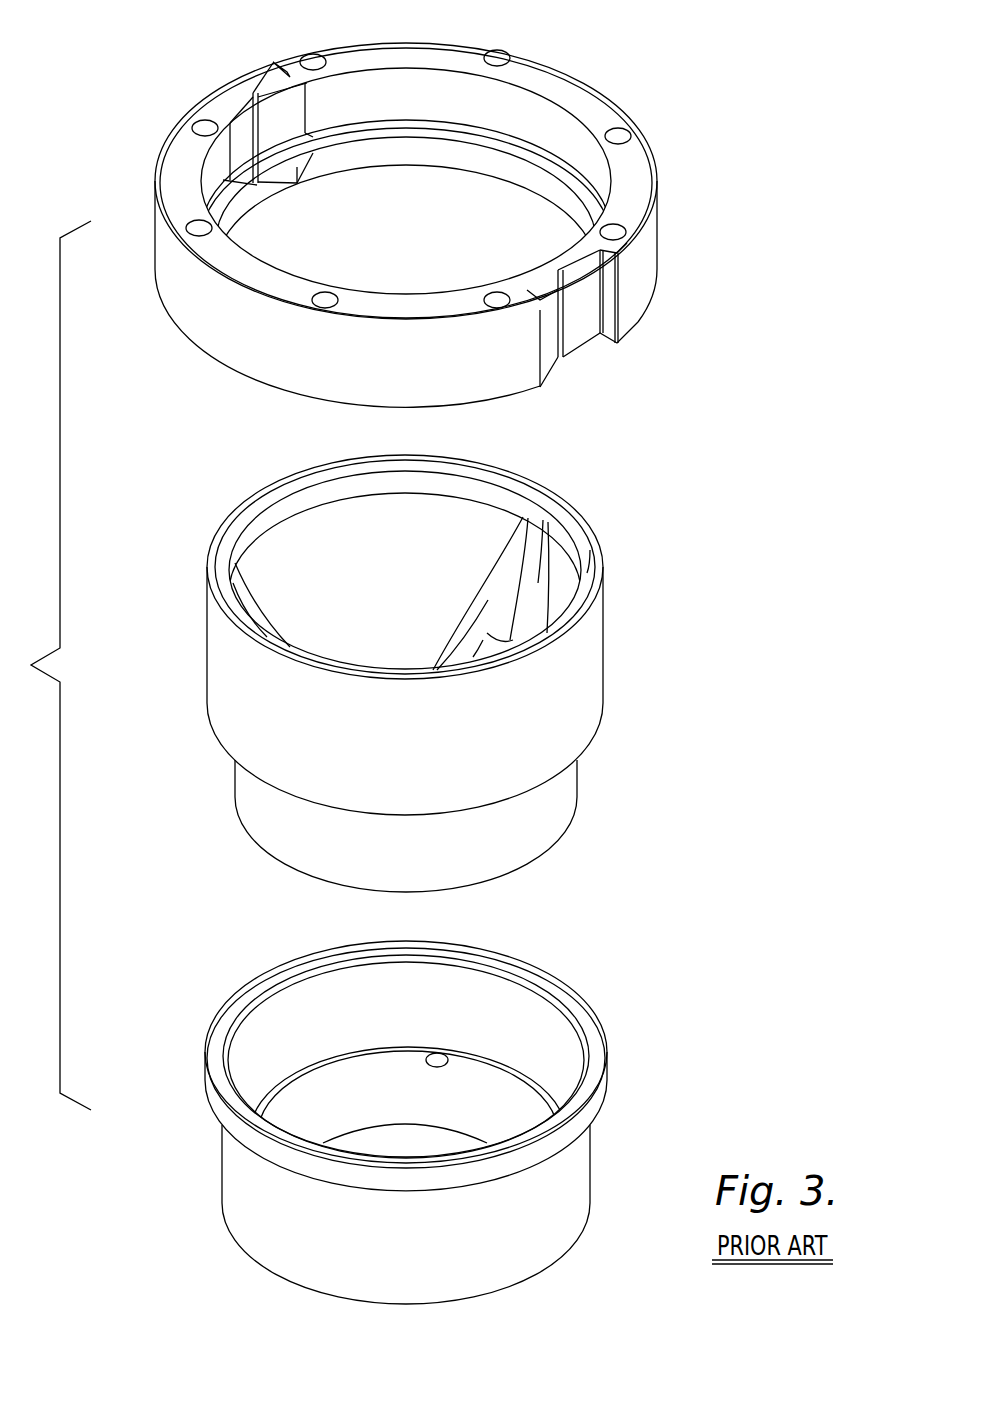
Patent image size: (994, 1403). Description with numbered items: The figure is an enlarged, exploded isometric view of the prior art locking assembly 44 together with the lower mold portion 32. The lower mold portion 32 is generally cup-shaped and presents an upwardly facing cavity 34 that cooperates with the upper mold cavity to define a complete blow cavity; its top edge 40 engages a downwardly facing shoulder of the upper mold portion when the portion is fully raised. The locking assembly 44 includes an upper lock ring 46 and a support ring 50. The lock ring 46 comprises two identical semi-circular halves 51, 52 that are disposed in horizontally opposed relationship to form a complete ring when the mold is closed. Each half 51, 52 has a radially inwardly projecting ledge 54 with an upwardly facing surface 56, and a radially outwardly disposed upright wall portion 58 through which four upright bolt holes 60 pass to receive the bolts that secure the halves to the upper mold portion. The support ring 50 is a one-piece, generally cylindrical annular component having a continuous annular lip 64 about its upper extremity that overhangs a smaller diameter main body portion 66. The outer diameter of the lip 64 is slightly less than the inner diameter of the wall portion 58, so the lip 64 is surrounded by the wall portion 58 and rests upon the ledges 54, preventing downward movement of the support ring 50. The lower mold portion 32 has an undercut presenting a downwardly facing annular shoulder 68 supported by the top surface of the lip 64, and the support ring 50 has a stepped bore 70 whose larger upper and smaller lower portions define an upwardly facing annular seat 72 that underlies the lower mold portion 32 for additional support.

The lower mold portion 32 is at (625, 647).
The upwardly facing cavity 34 is at (487, 520).
The top edge 40 is at (590, 548).
The locking assembly 44 is at (618, 50).
The upper lock ring 46 is at (646, 110).
The support ring 50 is at (620, 1088).
The semi-circular half 51 is at (437, 33).
The semi-circular half 52 is at (152, 150).
The ledge 54 is at (412, 155).
The upwardly facing surface 56 is at (340, 135).
The upright wall portion 58 is at (353, 80).
The bolt holes 60 is at (313, 62).
The annular lip 64 is at (590, 1020).
The main body portion 66 is at (568, 1175).
The annular shoulder 68 is at (583, 765).
The stepped bore 70 is at (500, 990).
The annular seat 72 is at (318, 1080).